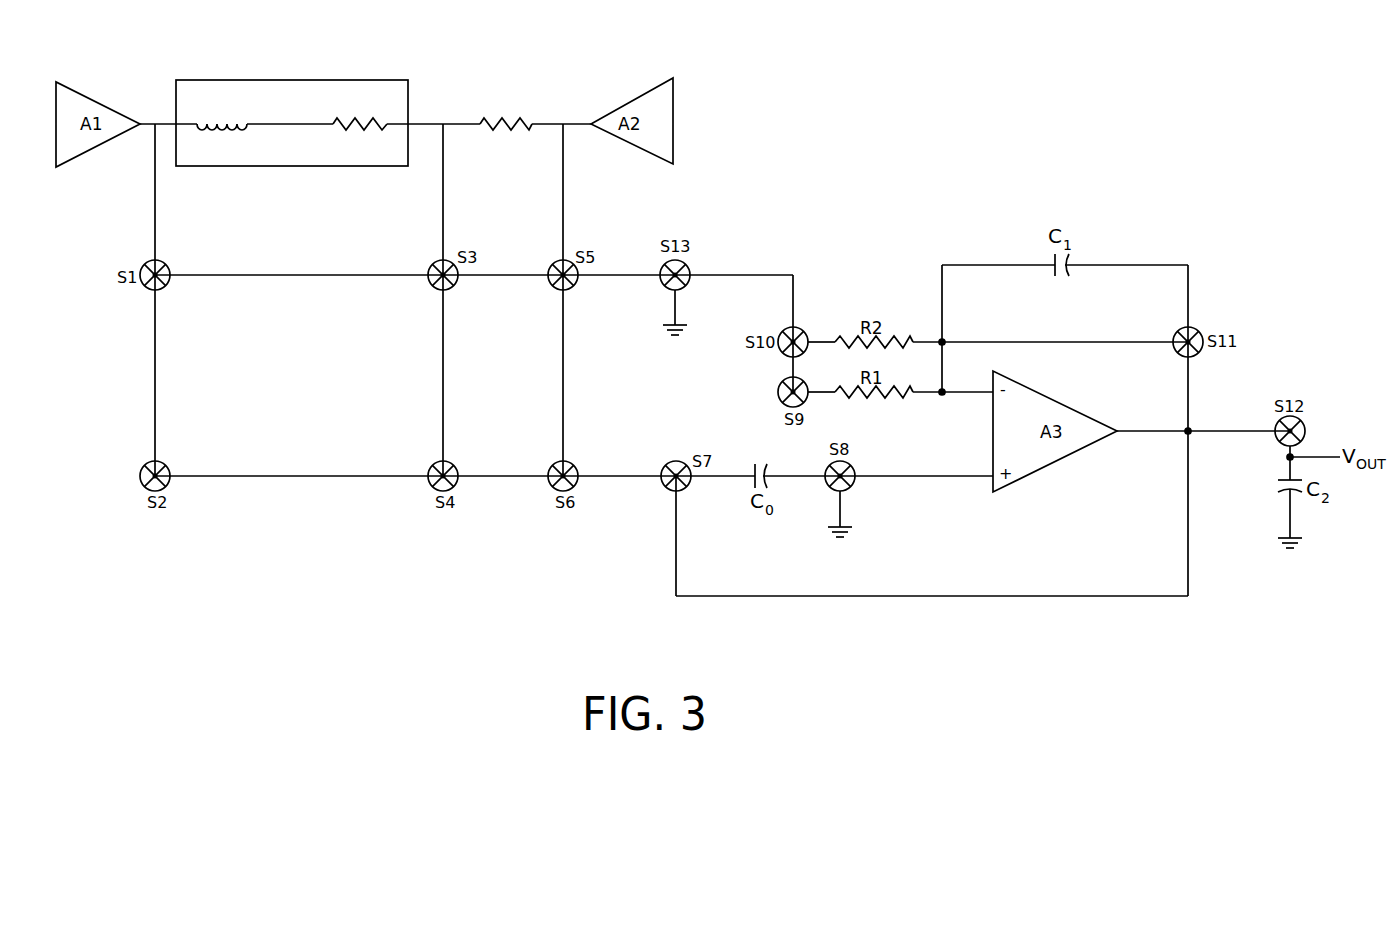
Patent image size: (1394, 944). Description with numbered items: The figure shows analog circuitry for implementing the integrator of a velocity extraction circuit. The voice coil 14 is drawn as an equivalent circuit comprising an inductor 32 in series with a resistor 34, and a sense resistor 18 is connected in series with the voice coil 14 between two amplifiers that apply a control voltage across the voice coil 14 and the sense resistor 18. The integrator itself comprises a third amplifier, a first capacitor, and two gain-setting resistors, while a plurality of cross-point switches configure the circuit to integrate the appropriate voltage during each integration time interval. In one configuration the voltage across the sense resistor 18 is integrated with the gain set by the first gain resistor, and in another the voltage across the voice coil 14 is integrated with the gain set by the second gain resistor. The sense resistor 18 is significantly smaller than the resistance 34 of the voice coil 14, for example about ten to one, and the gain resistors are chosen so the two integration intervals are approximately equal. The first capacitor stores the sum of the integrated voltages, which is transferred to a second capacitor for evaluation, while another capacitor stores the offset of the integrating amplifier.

The voice coil 14 is at (290, 80).
The inductor 32 is at (226, 117).
The resistor 34 is at (357, 117).
The sense resistor 18 is at (508, 136).